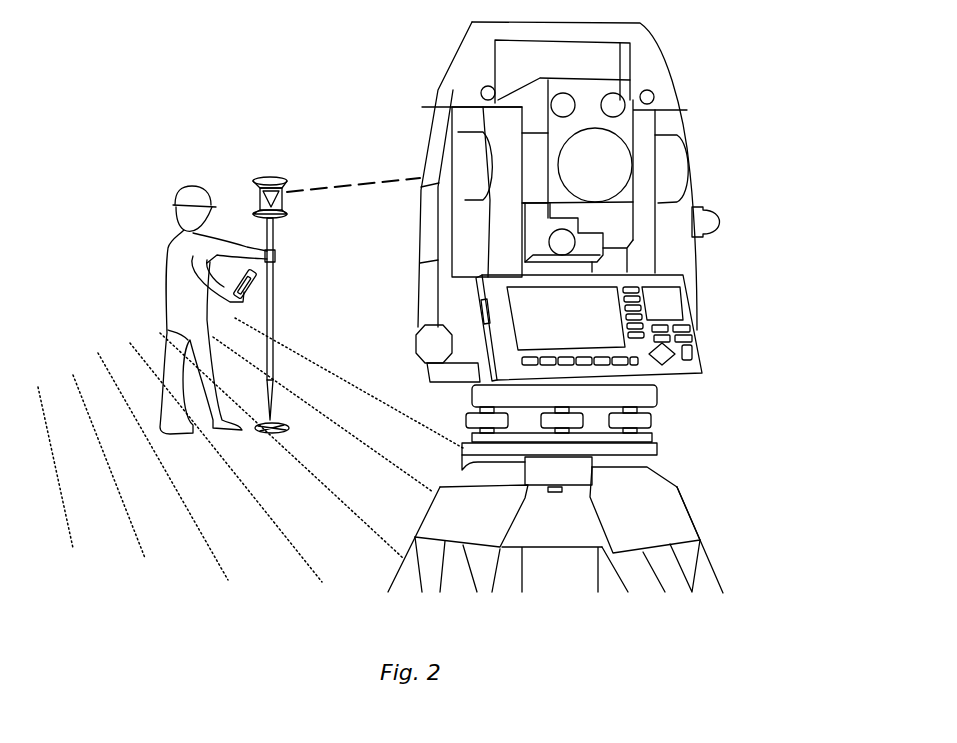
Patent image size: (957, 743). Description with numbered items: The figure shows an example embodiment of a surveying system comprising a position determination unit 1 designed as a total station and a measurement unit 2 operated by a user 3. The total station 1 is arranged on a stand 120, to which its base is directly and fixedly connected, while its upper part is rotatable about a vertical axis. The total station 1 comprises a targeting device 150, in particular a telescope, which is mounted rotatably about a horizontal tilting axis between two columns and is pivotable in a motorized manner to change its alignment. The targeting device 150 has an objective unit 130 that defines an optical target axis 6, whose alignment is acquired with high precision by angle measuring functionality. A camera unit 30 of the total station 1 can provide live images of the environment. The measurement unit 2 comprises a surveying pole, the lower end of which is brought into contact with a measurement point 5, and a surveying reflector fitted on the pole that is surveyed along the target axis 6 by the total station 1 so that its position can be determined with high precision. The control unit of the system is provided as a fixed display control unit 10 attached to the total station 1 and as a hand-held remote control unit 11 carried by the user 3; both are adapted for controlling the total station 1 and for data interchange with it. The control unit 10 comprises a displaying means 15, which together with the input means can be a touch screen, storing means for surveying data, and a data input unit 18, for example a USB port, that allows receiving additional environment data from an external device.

The position determination unit 1 is at (583, 238).
The measurement unit 2 is at (267, 162).
The user 3 is at (142, 289).
The measurement point 5 is at (285, 440).
The optical target axis 6 is at (388, 178).
The display control unit 10 is at (678, 365).
The hand-held remote control unit 11 is at (253, 287).
The displaying means 15 is at (478, 372).
The data input unit 18 is at (490, 323).
The camera unit 30 is at (555, 100).
The stand 120 is at (677, 517).
The objective unit 130 is at (605, 160).
The targeting device 150 is at (622, 222).